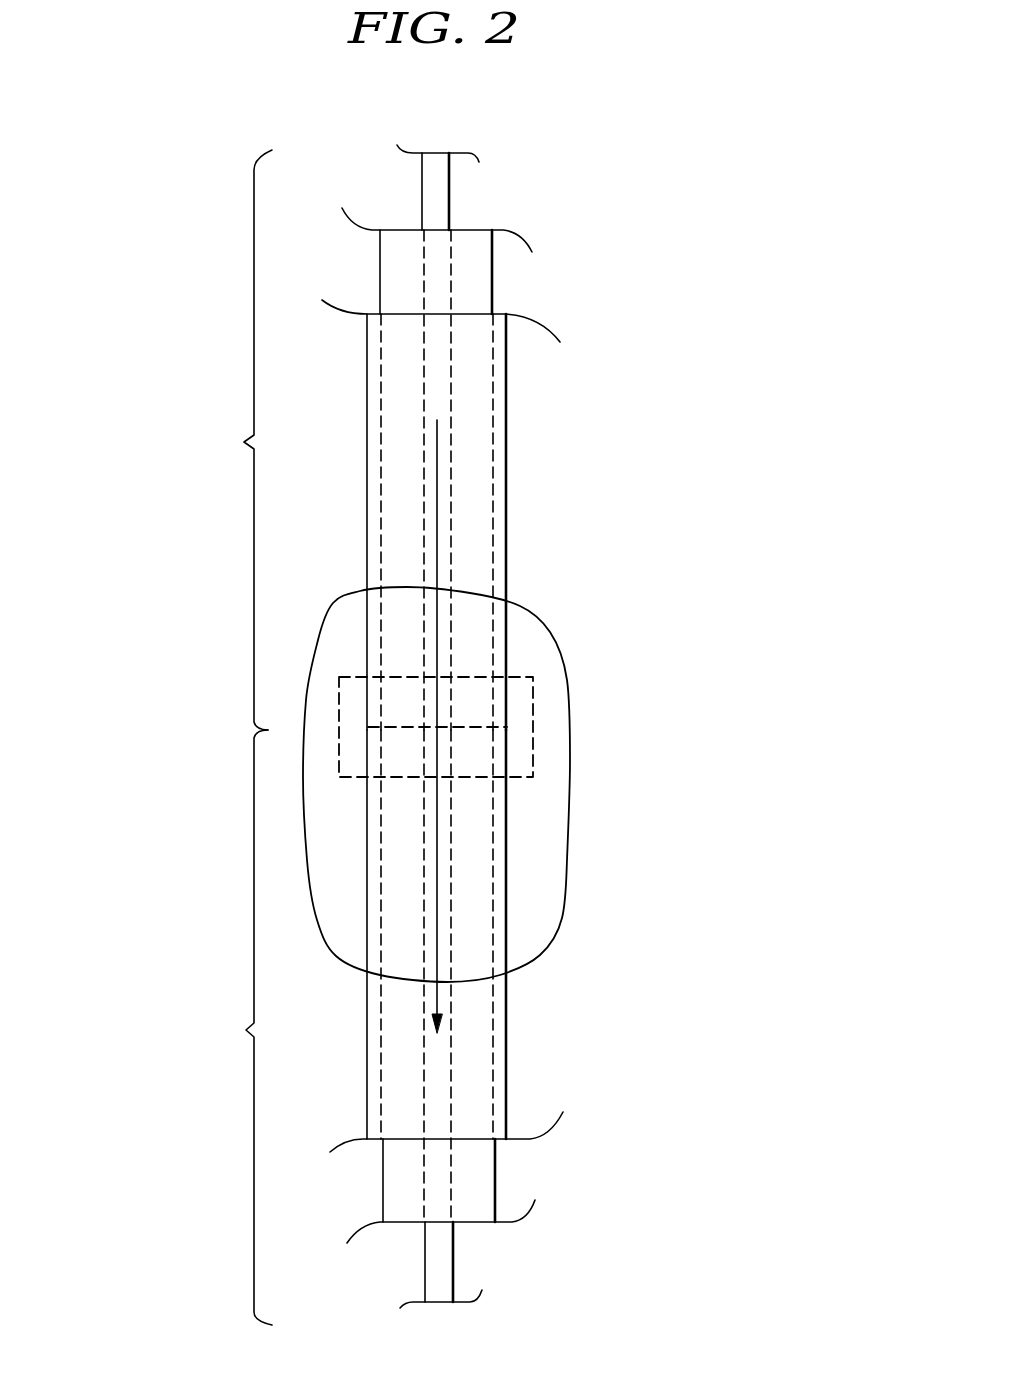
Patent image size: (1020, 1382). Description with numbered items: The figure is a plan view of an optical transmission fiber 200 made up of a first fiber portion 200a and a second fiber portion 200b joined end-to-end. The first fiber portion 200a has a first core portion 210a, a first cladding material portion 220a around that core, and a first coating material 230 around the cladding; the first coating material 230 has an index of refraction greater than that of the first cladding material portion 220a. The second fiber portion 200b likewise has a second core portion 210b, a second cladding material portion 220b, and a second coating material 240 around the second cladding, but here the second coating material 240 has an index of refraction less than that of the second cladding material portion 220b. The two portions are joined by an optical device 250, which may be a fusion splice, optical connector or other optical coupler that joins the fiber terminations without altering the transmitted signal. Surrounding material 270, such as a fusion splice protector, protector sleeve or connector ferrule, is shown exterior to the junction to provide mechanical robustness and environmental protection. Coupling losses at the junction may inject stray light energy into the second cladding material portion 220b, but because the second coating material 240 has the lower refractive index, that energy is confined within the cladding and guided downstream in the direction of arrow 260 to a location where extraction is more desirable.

The optical transmission fiber 200 is at (437, 699).
The first fiber portion 200a is at (244, 442).
The second fiber portion 200b is at (246, 1030).
The first core portion 210a is at (449, 193).
The second core portion 210b is at (453, 1262).
The first cladding material portion 220a is at (492, 287).
The second cladding material portion 220b is at (495, 1173).
The first coating material 230 is at (506, 402).
The second coating material 240 is at (508, 1056).
The optical device 250 is at (533, 728).
The arrow 260 is at (437, 498).
The surrounding material 270 is at (565, 877).